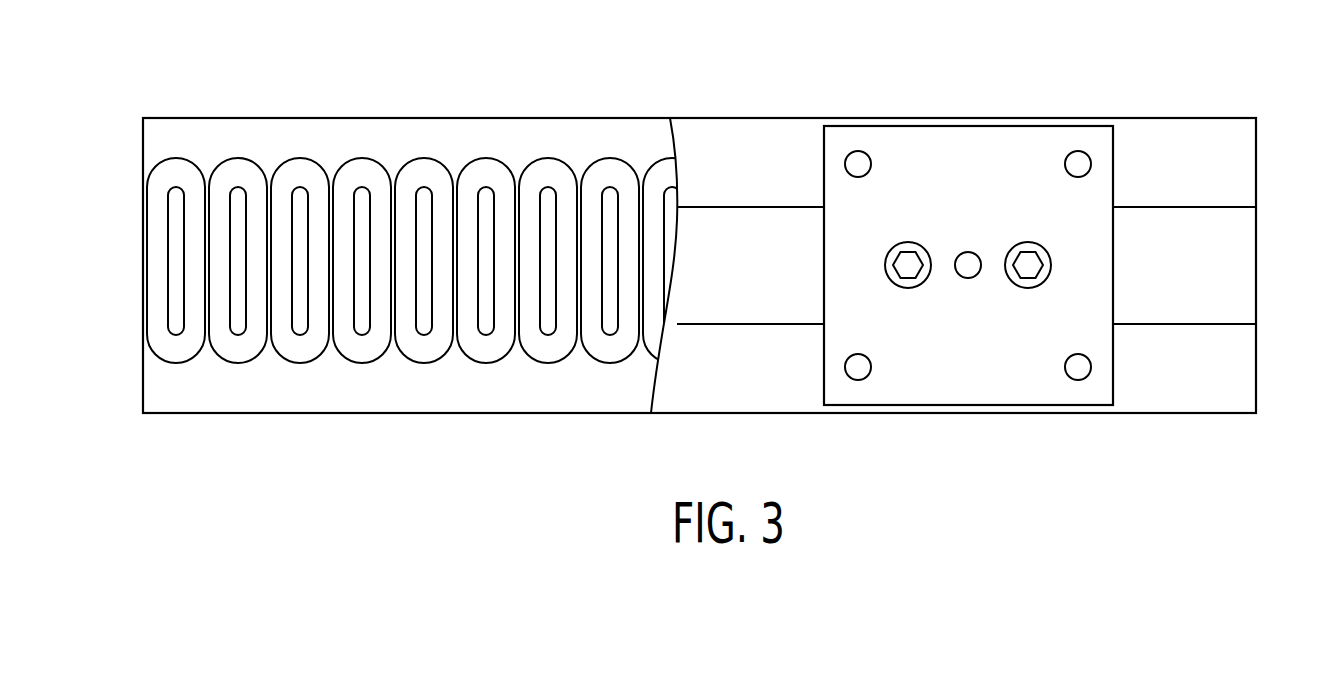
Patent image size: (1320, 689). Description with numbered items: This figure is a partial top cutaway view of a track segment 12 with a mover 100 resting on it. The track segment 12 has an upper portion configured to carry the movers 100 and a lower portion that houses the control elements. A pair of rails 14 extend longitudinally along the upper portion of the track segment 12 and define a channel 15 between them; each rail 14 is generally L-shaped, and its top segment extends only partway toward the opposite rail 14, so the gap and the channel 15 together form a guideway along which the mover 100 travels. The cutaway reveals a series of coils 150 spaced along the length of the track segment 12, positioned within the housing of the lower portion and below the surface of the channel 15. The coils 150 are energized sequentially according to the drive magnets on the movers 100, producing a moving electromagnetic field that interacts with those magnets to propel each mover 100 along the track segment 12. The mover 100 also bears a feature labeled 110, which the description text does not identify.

The track segment 12 is at (133, 143).
The coils 150 is at (365, 172).
The rails 14 is at (713, 134).
The channel 15 is at (1232, 273).
The mover 100 is at (958, 165).
The fasteners 110 is at (998, 332).